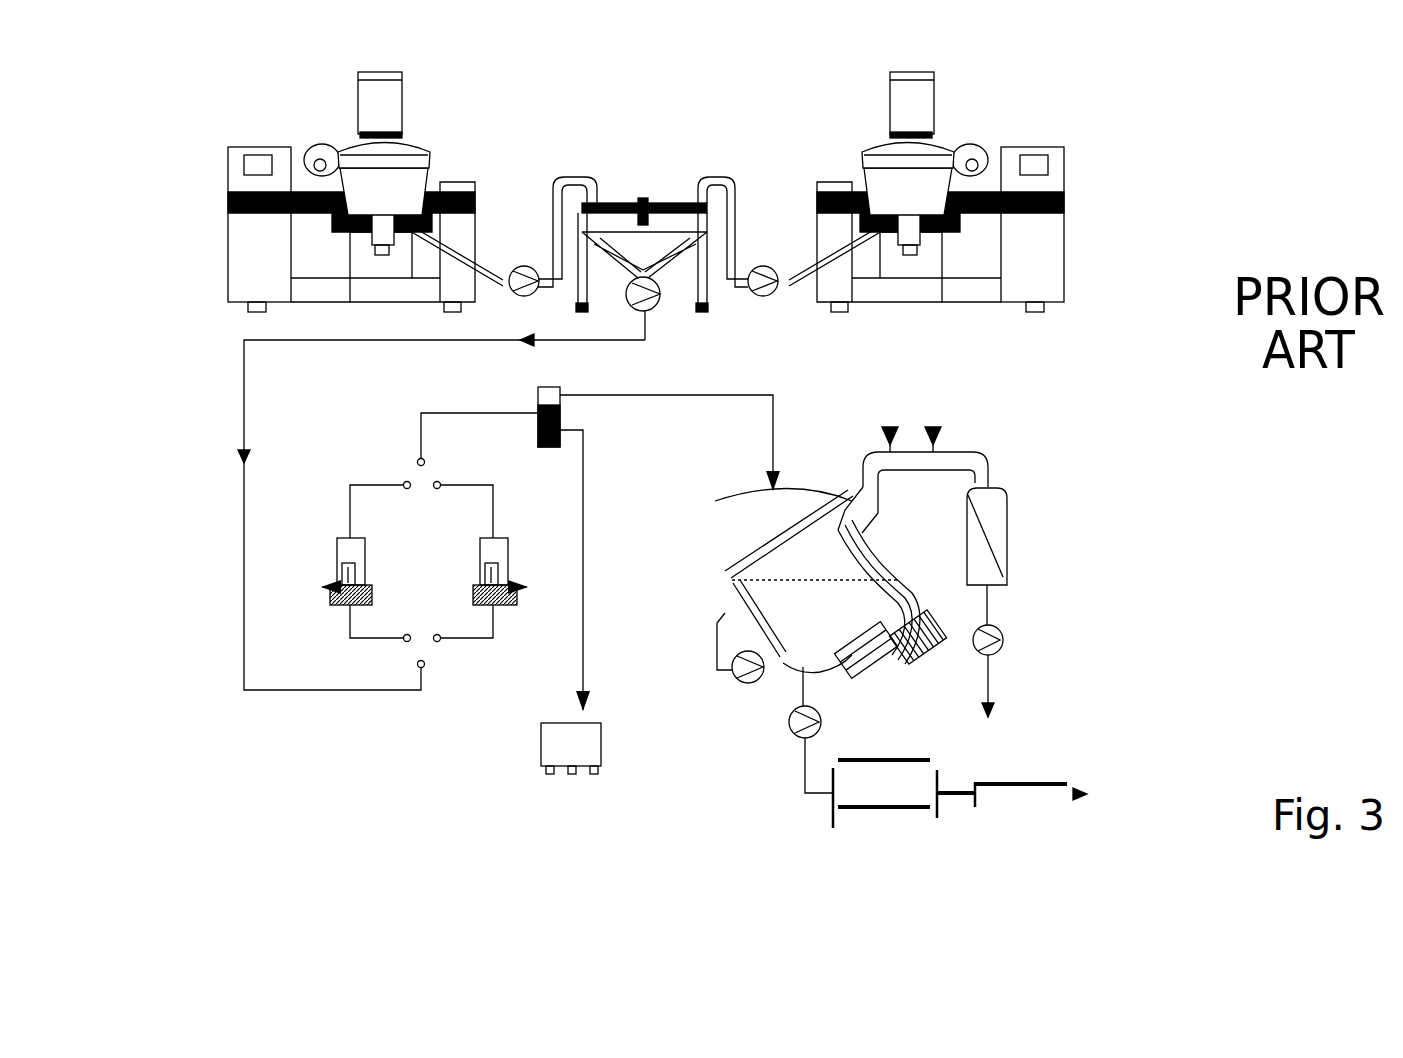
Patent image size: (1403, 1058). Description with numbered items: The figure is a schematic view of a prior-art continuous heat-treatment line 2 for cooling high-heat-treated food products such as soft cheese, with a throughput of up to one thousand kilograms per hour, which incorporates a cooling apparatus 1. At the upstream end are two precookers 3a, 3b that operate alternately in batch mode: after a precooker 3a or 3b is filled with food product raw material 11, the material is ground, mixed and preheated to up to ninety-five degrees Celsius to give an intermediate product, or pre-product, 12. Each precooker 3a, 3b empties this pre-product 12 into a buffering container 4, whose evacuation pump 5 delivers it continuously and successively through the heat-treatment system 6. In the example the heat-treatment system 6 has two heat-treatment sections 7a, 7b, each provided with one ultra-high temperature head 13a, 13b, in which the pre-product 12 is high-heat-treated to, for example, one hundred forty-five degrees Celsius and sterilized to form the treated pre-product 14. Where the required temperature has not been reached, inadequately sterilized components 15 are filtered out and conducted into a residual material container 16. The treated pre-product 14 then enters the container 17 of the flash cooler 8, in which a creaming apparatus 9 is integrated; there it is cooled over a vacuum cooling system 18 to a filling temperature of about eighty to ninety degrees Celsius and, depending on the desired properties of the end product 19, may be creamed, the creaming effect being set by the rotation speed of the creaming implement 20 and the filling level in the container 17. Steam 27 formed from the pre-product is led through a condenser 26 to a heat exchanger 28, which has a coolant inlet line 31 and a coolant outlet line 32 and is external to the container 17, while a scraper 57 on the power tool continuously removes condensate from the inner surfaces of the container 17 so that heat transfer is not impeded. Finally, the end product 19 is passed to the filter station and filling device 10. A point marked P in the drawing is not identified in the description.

The apparatus 1 is at (1078, 432).
The heat-treatment line 2 is at (1292, 95).
The precooker 3a is at (284, 116).
The precooker 3b is at (1073, 67).
The buffering container 4 is at (655, 122).
The evacuation pump 5 is at (580, 260).
The heat-treatment system 6 is at (380, 599).
The heat-treatment section 7a is at (243, 638).
The heat-treatment section 7b is at (509, 636).
The flash cooler 8 is at (782, 385).
The creaming apparatus 9 is at (893, 700).
The filling device 10 is at (958, 858).
The food product raw material 11 is at (393, 197).
The intermediate product 12 is at (660, 247).
The ultra-high temperature head 13a is at (335, 565).
The ultra-high temperature head 13b is at (537, 538).
The pre-product 14 is at (415, 432).
The inadequately sterilized components 15 is at (583, 645).
The residual material container 16 is at (567, 748).
The container 17 is at (817, 505).
The vacuum cooling system 18 is at (988, 452).
The end product 19 is at (805, 688).
The creaming implement 20 is at (913, 482).
The condenser 26 is at (910, 487).
The steam 27 is at (805, 556).
The heat exchanger 28 is at (1017, 503).
The coolant inlet line 31 is at (1013, 583).
The coolant outlet line 32 is at (960, 500).
The scraper 57 is at (814, 607).
The pressure sensor P is at (762, 575).